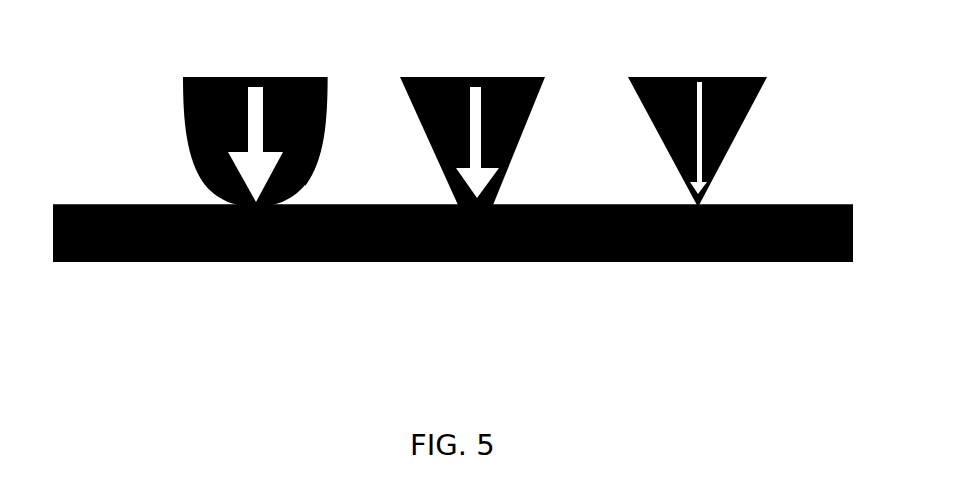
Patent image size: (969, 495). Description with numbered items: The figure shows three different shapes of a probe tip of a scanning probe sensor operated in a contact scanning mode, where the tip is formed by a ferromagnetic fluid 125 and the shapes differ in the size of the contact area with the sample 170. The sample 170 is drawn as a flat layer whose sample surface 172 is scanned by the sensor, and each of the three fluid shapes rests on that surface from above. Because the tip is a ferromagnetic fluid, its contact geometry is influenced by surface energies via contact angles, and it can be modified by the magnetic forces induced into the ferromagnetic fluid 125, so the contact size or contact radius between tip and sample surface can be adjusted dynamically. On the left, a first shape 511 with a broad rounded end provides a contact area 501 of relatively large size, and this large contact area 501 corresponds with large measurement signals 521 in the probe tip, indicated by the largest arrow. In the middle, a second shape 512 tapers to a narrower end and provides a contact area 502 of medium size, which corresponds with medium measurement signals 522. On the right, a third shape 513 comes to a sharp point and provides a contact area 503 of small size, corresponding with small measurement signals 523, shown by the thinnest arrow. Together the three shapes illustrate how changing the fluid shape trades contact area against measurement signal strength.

The sample 170 is at (372, 248).
The sample surface 172 is at (130, 205).
The ferromagnetic fluid 125 is at (318, 150).
The first shape 511 is at (186, 115).
The second shape 512 is at (400, 77).
The third shape 513 is at (765, 77).
The large measurement signals 521 is at (253, 77).
The medium measurement signals 522 is at (475, 77).
The small measurement signals 523 is at (690, 77).
The contact area 501 is at (257, 207).
The contact area 502 is at (478, 207).
The contact area 503 is at (698, 207).